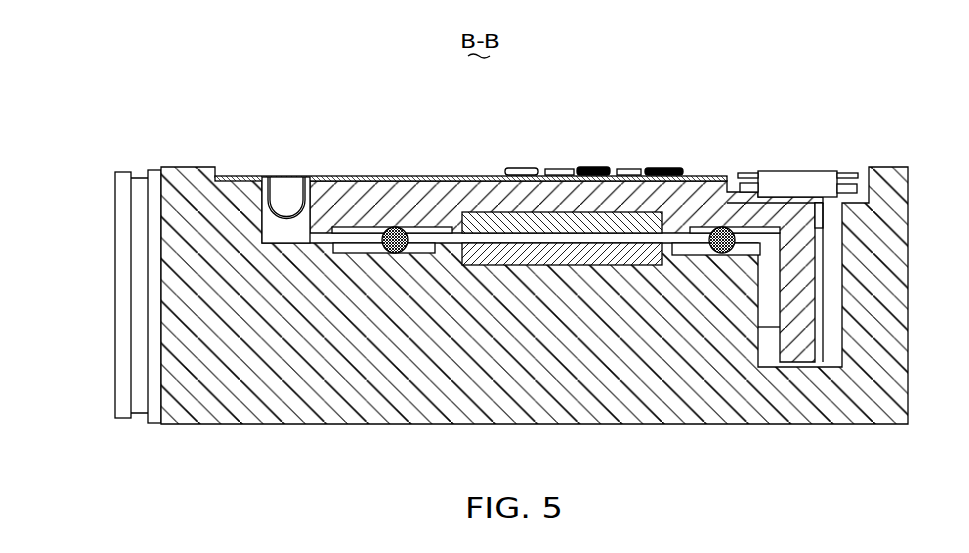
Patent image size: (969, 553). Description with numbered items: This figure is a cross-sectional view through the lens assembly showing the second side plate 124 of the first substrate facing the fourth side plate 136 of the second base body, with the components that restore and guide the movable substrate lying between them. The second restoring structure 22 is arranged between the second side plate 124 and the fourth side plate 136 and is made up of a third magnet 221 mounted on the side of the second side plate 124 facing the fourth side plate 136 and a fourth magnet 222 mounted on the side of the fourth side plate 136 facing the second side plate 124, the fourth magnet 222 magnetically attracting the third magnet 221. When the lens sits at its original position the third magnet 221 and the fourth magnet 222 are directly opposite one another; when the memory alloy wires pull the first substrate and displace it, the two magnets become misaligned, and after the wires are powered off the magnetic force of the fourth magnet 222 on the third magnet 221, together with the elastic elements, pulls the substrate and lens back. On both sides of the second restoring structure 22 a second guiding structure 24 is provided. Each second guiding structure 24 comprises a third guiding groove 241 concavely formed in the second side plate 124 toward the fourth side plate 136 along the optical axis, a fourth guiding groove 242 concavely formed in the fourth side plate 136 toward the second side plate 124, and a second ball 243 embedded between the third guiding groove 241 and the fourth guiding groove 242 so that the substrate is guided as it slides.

The fourth side plate 136 is at (690, 403).
The second side plate 124 is at (690, 197).
The second guiding structure 24 is at (534, 166).
The third guiding groove 241 is at (352, 230).
The fourth guiding groove 242 is at (430, 247).
The second ball 243 is at (392, 229).
The second restoring structure 22 is at (562, 171).
The third magnet 221 is at (613, 228).
The fourth magnet 222 is at (549, 252).